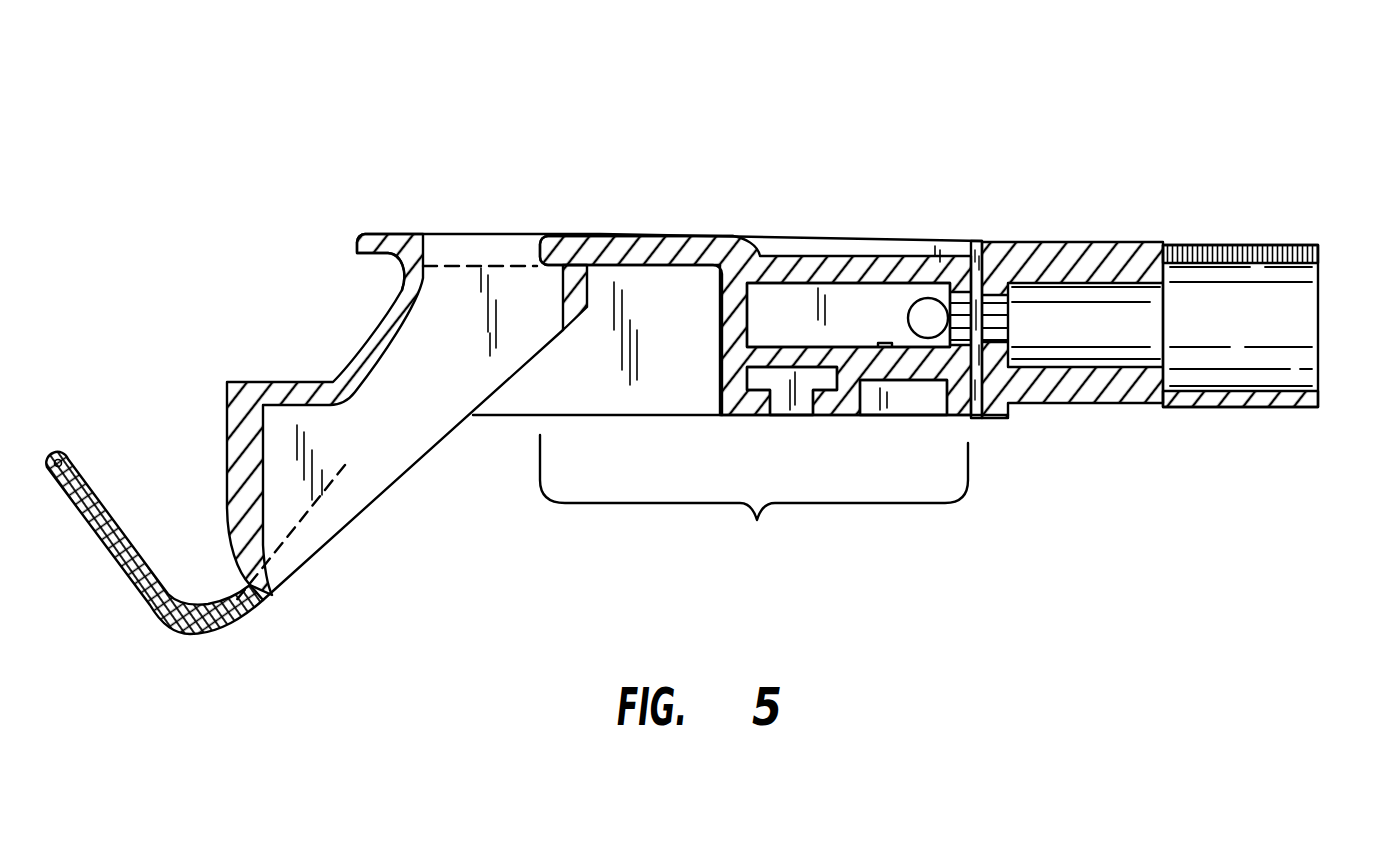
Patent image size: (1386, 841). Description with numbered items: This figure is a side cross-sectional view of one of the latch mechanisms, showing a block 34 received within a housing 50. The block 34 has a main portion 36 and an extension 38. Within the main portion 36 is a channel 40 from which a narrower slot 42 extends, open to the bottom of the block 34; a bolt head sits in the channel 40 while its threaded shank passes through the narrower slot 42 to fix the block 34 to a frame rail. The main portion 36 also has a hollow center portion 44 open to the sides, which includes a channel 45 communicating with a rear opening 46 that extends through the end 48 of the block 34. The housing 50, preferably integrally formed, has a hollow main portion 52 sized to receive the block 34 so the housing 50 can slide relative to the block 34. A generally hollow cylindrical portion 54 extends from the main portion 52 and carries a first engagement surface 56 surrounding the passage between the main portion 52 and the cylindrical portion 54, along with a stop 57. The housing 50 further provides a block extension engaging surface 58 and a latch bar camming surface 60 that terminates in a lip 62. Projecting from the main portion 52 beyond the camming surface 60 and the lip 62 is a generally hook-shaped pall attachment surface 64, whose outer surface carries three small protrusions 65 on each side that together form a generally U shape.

The block 34 is at (754, 497).
The main portion 36 is at (858, 266).
The extension 38 is at (632, 252).
The channel 40 is at (802, 383).
The narrower slot 42 is at (912, 396).
The hollow center portion 44 is at (813, 303).
The channel 45 is at (944, 352).
The rear opening 46 is at (960, 318).
The end 48 is at (958, 275).
The housing 50 is at (860, 125).
The hollow main portion 52 is at (513, 250).
The cylindrical portion 54 is at (1216, 243).
The first engagement surface 56 is at (1142, 286).
The stop 57 is at (1167, 378).
The block extension engaging surface 58 is at (457, 265).
The latch bar camming surface 60 is at (378, 325).
The lip 62 is at (372, 256).
The pall attachment surface 64 is at (222, 634).
The small protrusions 65 is at (243, 625).